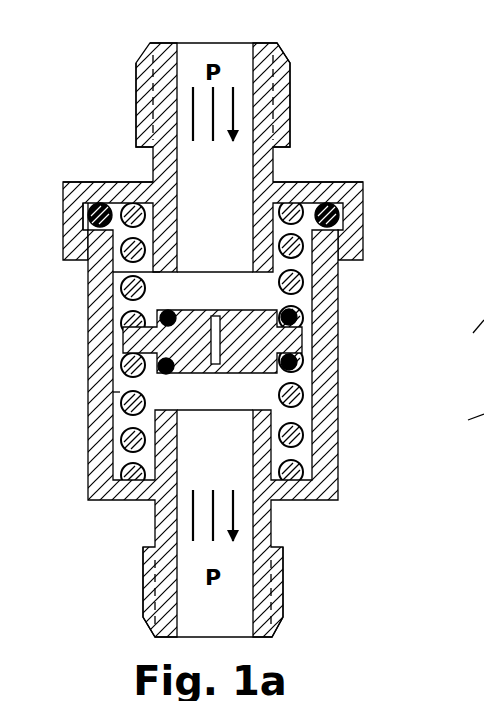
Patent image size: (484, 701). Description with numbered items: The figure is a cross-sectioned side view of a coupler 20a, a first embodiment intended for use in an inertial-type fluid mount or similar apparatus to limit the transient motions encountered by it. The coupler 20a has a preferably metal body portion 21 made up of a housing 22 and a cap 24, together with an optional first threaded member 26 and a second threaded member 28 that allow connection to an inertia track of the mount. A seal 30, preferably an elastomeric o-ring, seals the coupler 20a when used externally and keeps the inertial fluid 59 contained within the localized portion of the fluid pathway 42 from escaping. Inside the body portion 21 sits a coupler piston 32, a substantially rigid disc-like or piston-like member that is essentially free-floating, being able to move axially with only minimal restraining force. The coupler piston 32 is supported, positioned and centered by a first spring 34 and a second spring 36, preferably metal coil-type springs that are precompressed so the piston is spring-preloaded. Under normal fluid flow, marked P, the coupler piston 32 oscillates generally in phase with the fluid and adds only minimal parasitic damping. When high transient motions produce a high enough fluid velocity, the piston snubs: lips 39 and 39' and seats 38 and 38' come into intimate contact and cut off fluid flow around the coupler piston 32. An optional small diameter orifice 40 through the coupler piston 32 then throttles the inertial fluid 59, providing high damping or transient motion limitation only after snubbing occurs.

The coupler 20a is at (354, 176).
The body portion 21 is at (340, 409).
The housing 22 is at (337, 277).
The cap 24 is at (126, 181).
The first threaded member 26 is at (290, 78).
The second threaded member 28 is at (290, 568).
The seal 30 is at (332, 198).
The coupler piston 32 is at (303, 334).
The first spring 34 is at (78, 262).
The second spring 36 is at (338, 435).
The seat 38 is at (252, 398).
The seat 38' is at (281, 313).
The lip 39 is at (66, 425).
The lip 39' is at (87, 296).
The orifice 40 is at (214, 365).
The fluid pathway 42 is at (178, 53).
The inertial fluid 59 is at (163, 297).